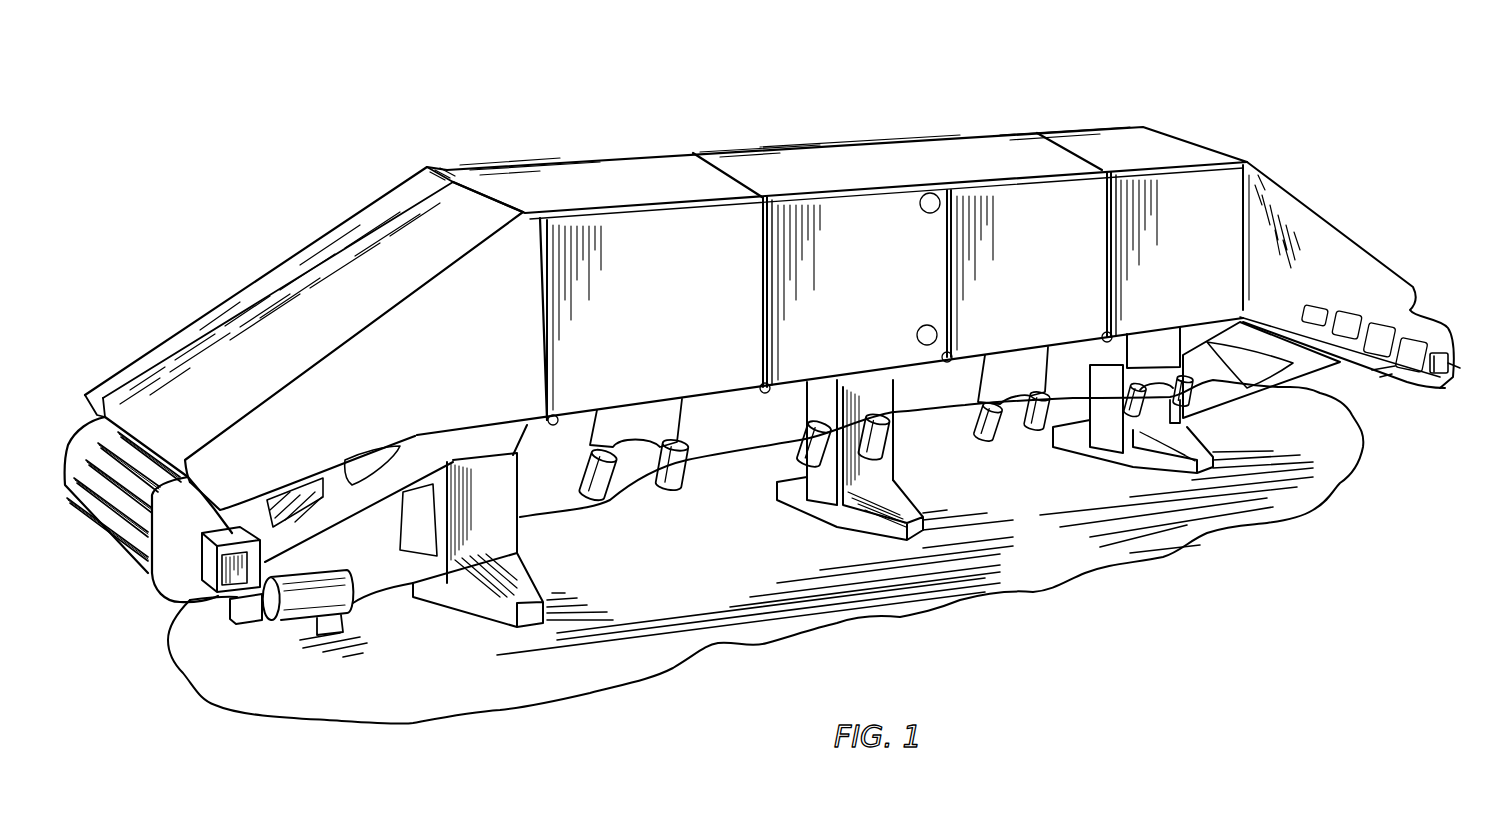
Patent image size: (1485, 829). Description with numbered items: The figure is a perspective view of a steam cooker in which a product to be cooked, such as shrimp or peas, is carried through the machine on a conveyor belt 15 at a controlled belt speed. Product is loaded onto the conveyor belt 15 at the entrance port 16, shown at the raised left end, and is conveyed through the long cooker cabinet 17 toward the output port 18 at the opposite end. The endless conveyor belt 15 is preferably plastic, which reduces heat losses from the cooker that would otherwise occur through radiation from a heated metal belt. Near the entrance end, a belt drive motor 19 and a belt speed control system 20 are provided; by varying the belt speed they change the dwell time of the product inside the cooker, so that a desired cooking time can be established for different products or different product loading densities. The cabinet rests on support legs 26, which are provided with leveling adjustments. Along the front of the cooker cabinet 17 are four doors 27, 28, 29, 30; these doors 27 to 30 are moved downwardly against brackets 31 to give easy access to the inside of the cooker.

The conveyor belt 15 is at (126, 547).
The entrance port 16 is at (172, 422).
The cooker cabinet 17 is at (950, 248).
The output port 18 is at (1450, 392).
The belt drive motor 19 is at (350, 608).
The belt speed control system 20 is at (205, 617).
The support legs 26 is at (520, 530).
The door 27 is at (667, 223).
The door 28 is at (867, 212).
The door 29 is at (1030, 207).
The door 30 is at (1170, 187).
The brackets 31 is at (660, 493).